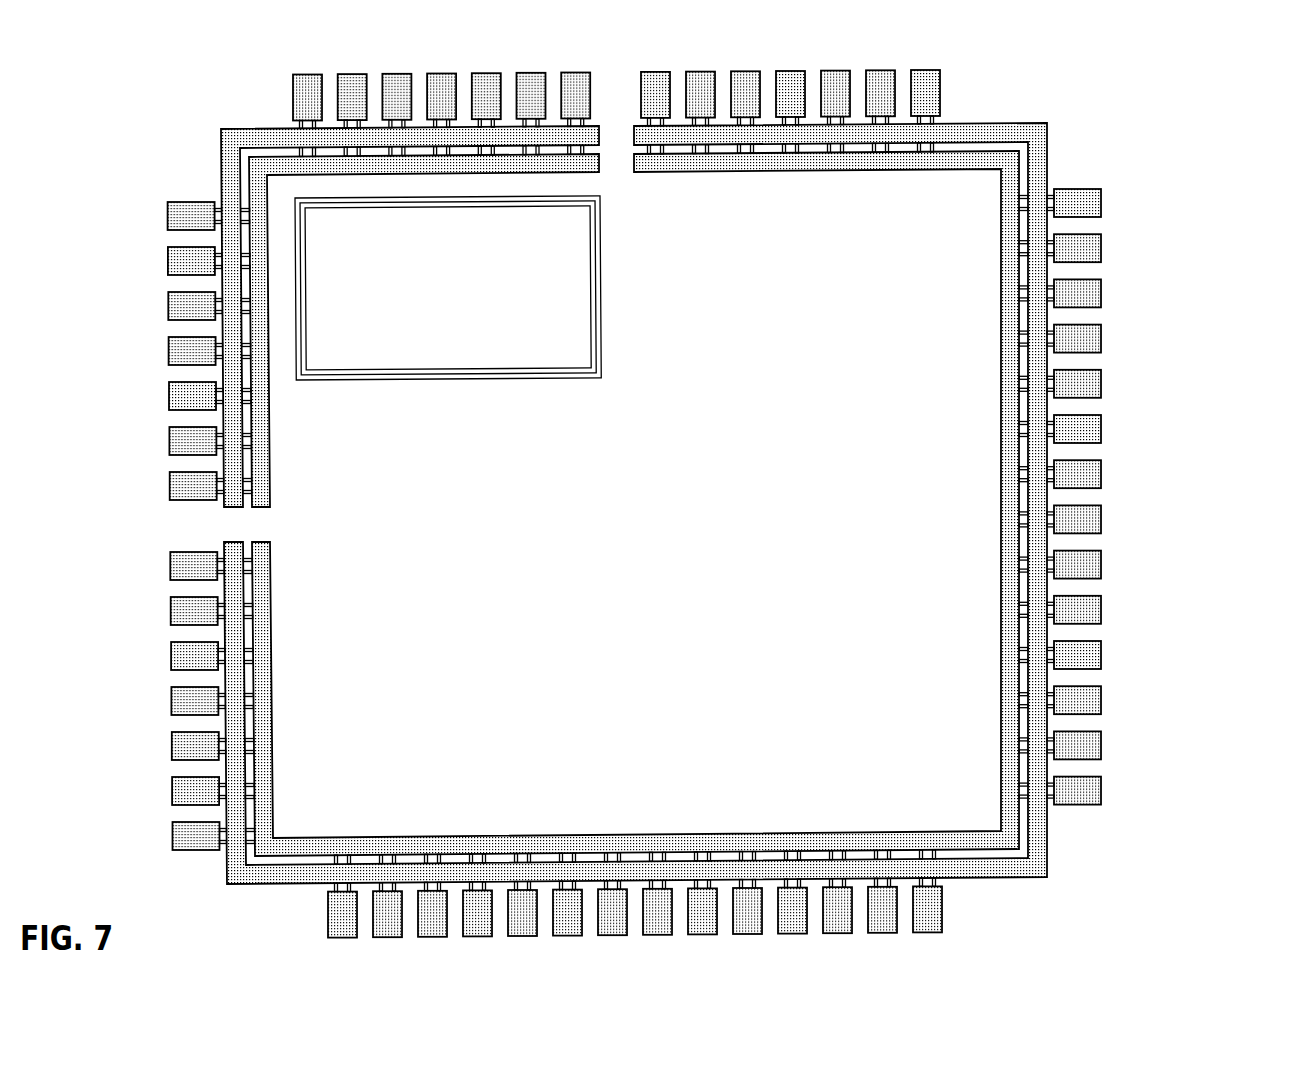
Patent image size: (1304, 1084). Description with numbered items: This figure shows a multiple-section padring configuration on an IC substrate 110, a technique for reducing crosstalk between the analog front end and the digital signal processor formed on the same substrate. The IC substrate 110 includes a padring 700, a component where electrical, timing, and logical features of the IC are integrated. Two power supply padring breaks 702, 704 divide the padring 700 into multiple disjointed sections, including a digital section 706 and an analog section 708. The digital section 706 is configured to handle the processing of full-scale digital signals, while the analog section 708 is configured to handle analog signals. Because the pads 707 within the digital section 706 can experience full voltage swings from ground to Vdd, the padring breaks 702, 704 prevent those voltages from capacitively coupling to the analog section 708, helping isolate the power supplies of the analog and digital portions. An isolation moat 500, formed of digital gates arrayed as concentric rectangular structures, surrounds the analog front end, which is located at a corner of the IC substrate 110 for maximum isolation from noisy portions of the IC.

The padring 700 is at (1063, 142).
The analog section 708 is at (213, 150).
The power supply padring break 702 is at (616, 163).
The power supply padring break 704 is at (260, 525).
The digital section 706 is at (1053, 275).
The pads 707 is at (1102, 430).
The IC substrate 110 is at (939, 805).
The isolation moat 500 is at (600, 287).